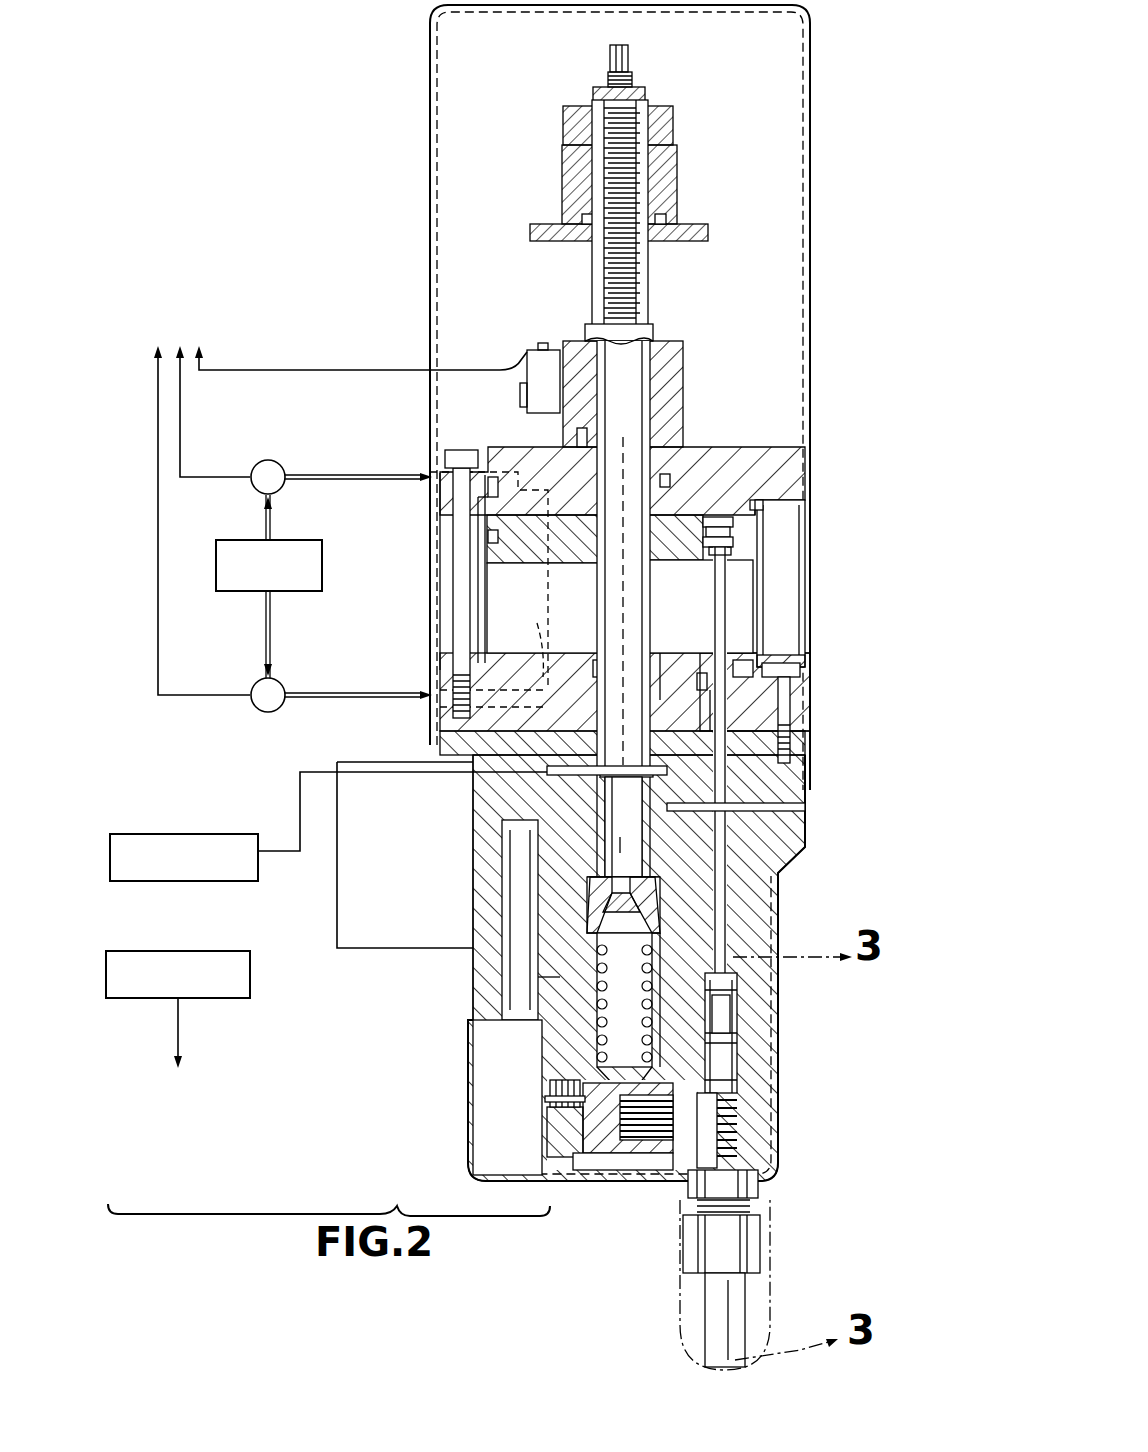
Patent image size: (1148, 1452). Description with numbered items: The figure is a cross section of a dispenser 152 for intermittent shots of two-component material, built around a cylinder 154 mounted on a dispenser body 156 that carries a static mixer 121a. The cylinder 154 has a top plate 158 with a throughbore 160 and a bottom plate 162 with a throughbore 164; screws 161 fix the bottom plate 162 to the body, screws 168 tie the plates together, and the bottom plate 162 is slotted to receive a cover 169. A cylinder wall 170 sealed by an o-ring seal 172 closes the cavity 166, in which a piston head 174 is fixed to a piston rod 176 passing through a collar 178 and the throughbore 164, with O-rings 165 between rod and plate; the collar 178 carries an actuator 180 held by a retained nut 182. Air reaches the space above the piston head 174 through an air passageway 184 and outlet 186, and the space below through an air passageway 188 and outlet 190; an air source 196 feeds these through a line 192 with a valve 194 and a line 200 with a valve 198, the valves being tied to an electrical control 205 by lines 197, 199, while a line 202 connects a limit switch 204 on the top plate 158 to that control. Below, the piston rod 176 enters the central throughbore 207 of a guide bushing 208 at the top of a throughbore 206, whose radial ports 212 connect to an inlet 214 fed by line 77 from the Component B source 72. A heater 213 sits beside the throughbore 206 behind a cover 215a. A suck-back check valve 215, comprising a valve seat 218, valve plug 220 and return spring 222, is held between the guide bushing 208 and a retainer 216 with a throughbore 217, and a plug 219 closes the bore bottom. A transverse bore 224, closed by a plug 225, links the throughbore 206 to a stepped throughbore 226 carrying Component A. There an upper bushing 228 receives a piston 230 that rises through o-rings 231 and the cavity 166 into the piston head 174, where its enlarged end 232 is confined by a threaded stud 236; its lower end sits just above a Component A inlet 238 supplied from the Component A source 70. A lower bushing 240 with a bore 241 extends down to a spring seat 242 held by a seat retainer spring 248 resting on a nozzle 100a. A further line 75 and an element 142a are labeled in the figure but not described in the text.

The cover 169 is at (812, 283).
The retained nut 182 is at (676, 130).
The actuator 180 is at (542, 243).
The piston rod 176 is at (628, 373).
The limit switch 204 is at (511, 358).
The throughbore 160 is at (665, 392).
The collar 178 is at (650, 428).
The cylinder 154 is at (782, 430).
The air passageway 184 is at (513, 473).
The top plate 158 is at (765, 473).
The threaded stud 236 is at (760, 493).
The o-ring seal 172 is at (778, 505).
The enlarged end 232 is at (763, 553).
The cylinder wall 170 is at (805, 580).
The piston head 174 is at (455, 538).
The screws 168 is at (462, 566).
The cavity 166 is at (513, 612).
The outlet 186 is at (532, 566).
The outlet 190 is at (620, 618).
The throughbore 164 is at (583, 690).
The O-rings 165 is at (660, 690).
The piston 230 is at (720, 600).
The o-rings 231 is at (710, 698).
The bottom plate 162 is at (808, 687).
The screws 161 is at (800, 718).
The upper bushing 228 is at (780, 758).
The air passageway 188 is at (465, 782).
The throughbore 206 is at (505, 830).
The guide bushing 208 is at (540, 854).
The dispenser body 156 is at (597, 845).
The central throughbore 207 is at (590, 889).
The valve seat 218 is at (605, 900).
The heater 213 is at (563, 967).
The suck-back check valve 215 is at (572, 958).
The cover 215a is at (468, 1102).
The return spring 222 is at (587, 1017).
The retainer 216 is at (550, 1088).
The plug 225 is at (560, 1105).
The throughbore 217 is at (590, 1130).
The plug 219 is at (617, 1150).
The transverse bore 224 is at (652, 1150).
The radial ports 212 is at (628, 827).
The inlet 214 is at (626, 607).
The Component A inlet 238 is at (803, 825).
The lower bushing 240 is at (787, 847).
The valve plug 220 is at (700, 906).
The bore 241 is at (720, 937).
The spring seat 242 is at (732, 1047).
The seat retainer spring 248 is at (712, 1112).
The stepped throughbore 226 is at (712, 1114).
The nozzle 100a is at (783, 1255).
The fitting 142a is at (697, 1243).
The static mixer 121a is at (748, 1320).
The dispenser 152 is at (338, 1103).
The Component B source 72 is at (170, 808).
The conduit 75 is at (300, 810).
The Component A source 70 is at (250, 998).
The line 77 is at (180, 1035).
The line 199 is at (152, 446).
The line 197 is at (185, 410).
The line 202 is at (342, 370).
The electrical control 205 is at (232, 320).
The valve 194 is at (277, 458).
The valve 198 is at (266, 716).
The line 192 is at (298, 483).
The line 200 is at (283, 650).
The air source 196 is at (218, 591).